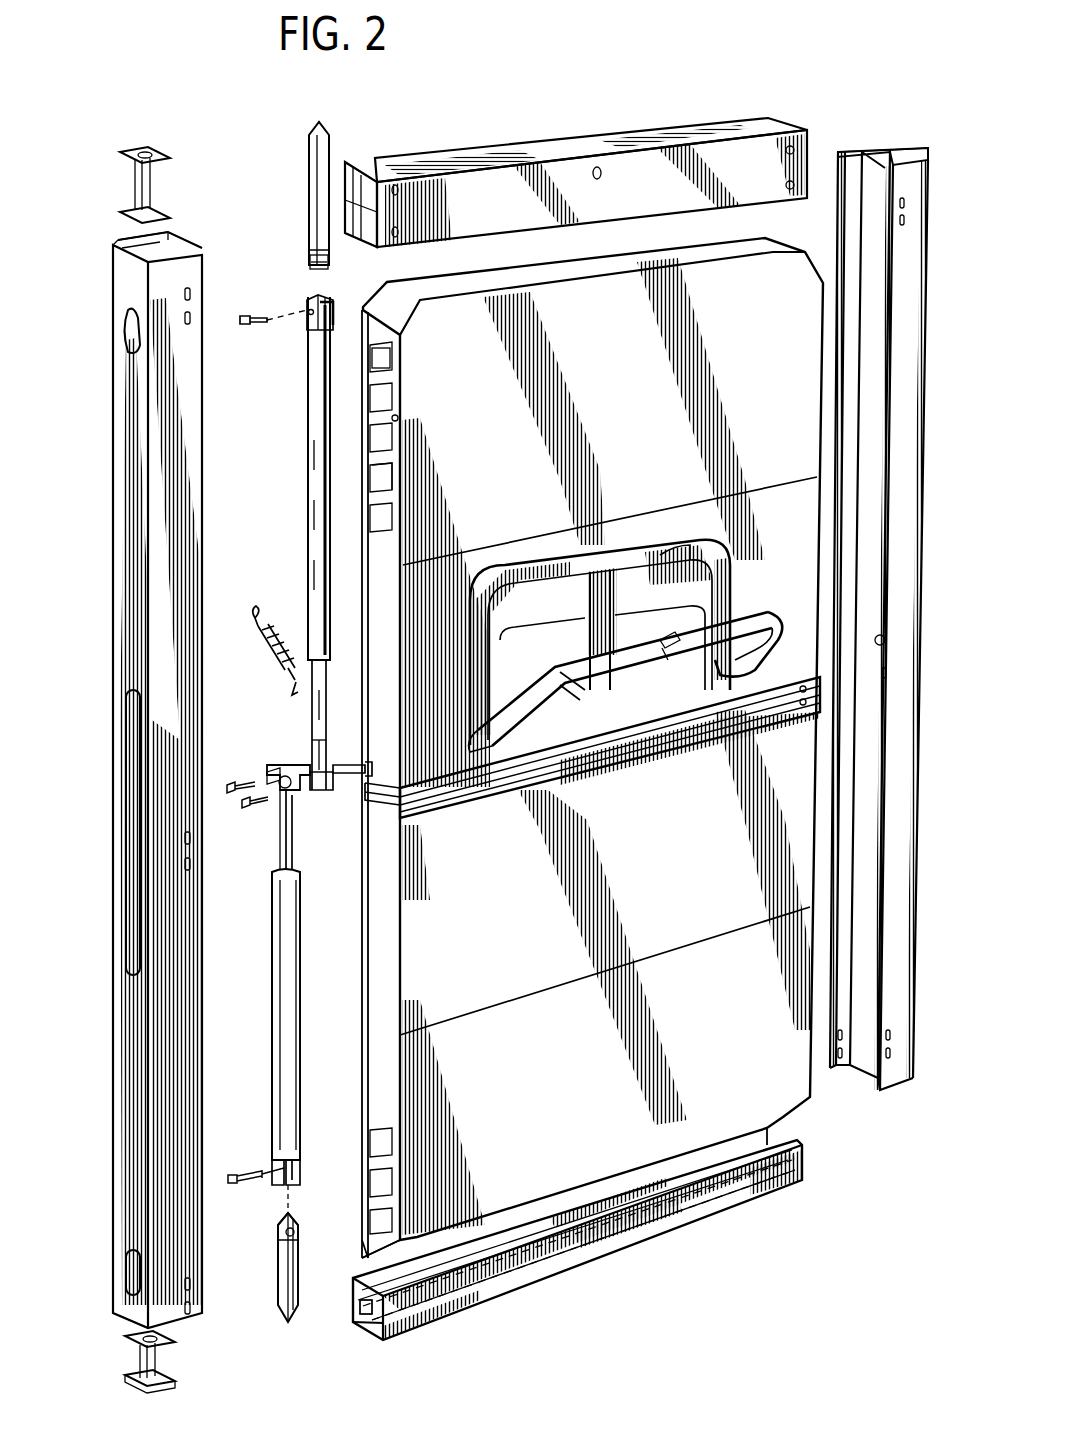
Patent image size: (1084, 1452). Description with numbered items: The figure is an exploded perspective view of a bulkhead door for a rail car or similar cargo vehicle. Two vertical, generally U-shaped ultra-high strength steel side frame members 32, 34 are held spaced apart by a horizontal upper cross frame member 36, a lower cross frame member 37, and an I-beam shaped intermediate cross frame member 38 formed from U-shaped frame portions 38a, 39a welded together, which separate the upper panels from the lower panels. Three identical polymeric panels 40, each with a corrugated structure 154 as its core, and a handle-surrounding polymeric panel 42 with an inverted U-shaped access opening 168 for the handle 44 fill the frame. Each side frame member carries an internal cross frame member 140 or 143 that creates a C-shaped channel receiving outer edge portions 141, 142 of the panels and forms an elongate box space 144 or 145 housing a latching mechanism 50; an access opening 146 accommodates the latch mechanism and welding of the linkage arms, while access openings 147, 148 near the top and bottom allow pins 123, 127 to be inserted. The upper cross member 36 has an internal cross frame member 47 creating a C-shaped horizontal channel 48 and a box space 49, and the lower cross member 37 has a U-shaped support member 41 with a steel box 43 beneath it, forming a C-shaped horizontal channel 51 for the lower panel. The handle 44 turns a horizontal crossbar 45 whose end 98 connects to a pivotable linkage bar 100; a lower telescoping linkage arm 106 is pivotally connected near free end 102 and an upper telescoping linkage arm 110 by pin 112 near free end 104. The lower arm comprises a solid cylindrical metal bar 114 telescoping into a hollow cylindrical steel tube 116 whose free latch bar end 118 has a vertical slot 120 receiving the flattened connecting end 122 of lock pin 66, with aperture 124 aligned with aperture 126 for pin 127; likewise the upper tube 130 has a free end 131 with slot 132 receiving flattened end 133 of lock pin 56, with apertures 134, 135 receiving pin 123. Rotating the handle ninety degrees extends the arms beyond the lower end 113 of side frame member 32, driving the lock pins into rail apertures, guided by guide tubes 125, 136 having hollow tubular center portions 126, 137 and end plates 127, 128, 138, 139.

The side frame member 32 is at (198, 384).
The side frame member 34 is at (895, 405).
The upper cross frame member 36 is at (474, 209).
The lower cross frame member 37 is at (700, 1225).
The intermediate cross frame member 38 is at (668, 745).
The U-shaped frame portion 38a is at (385, 810).
The U-shaped frame portion 39a is at (415, 815).
The polymeric panel 40 is at (603, 389).
The U-shaped support member 41 is at (353, 1300).
The handle-surrounding polymeric panel 42 is at (771, 530).
The steel box 43 is at (360, 1315).
The handle 44 is at (760, 610).
The horizontal crossbar 45 is at (345, 763).
The internal cross frame member 47 is at (365, 175).
The C-shaped horizontal channel 48 is at (360, 240).
The box space 49 is at (352, 170).
The latching mechanism 50 is at (310, 748).
The C-shaped horizontal channel 51 is at (368, 1275).
The lock pin 56 is at (322, 148).
The lock pin 66 is at (280, 1270).
The crossbar end 98 is at (280, 790).
The pivotable linkage bar 100 is at (284, 770).
The free end of linkage bar 102 is at (268, 775).
The free end of linkage bar 104 is at (320, 792).
The lower telescoping linkage arm 106 is at (280, 1042).
The upper telescoping linkage arm 110 is at (289, 529).
The pin 112 is at (291, 812).
The lower end of side frame member 113 is at (113, 1310).
The solid cylindrical metal bar 114 is at (280, 858).
The hollow cylindrical steel tube 116 is at (300, 920).
The free latch bar end 118 is at (278, 1185).
The vertical slot 120 is at (300, 1162).
The flattened connecting end 122 is at (298, 1230).
The pin 123 is at (247, 314).
The aperture 124 is at (282, 1230).
The guide tube 125 is at (164, 1347).
The aperture / hollow tubular center portion 126 is at (278, 1160).
The pin / end plate 127 is at (236, 1172).
The end plate 128 is at (165, 1382).
The hollow cylindrical steel tube 130 is at (308, 432).
The free latch bar end 131 is at (333, 302).
The vertical slot 132 is at (312, 297).
The flattened connecting end 133 is at (336, 255).
The aperture 134 is at (309, 264).
The aperture 135 is at (308, 312).
The guide tube 136 is at (156, 163).
The hollow tubular center portion 137 is at (135, 190).
The end plate 138 is at (152, 148).
The end plate 139 is at (160, 213).
The internal cross frame member 140 is at (180, 242).
The outer edge portion 141 is at (398, 418).
The outer edge portion 142 is at (395, 366).
The internal cross frame member 143 is at (858, 152).
The box space 144 is at (135, 238).
The box space 145 is at (895, 152).
The access opening 146 is at (126, 820).
The access opening 147 is at (128, 315).
The access opening 148 is at (126, 1265).
The corrugated structure 154 is at (394, 475).
The inverted U-shaped access opening 168 is at (665, 555).